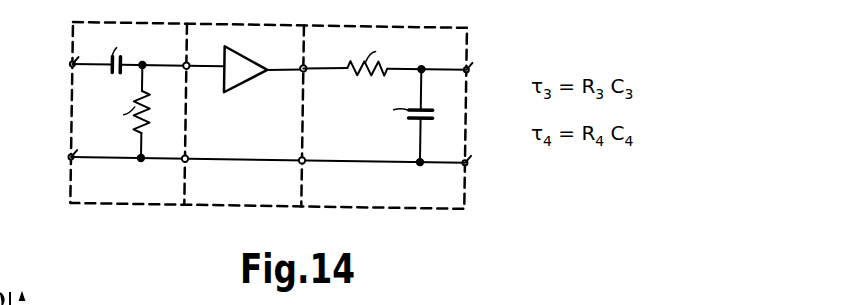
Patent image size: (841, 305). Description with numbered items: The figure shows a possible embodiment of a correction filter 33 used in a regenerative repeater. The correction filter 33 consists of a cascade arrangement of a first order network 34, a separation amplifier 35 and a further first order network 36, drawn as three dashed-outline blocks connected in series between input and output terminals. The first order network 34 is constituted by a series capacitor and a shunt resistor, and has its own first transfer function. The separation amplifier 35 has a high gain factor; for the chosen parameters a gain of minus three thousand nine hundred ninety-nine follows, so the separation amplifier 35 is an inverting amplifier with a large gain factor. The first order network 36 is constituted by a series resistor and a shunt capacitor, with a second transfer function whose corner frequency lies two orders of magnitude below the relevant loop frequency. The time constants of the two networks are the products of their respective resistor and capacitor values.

The correction filter 33 is at (73, 90).
The first order network 34 is at (140, 184).
The separation amplifier 35 is at (248, 56).
The first order network 36 is at (417, 187).